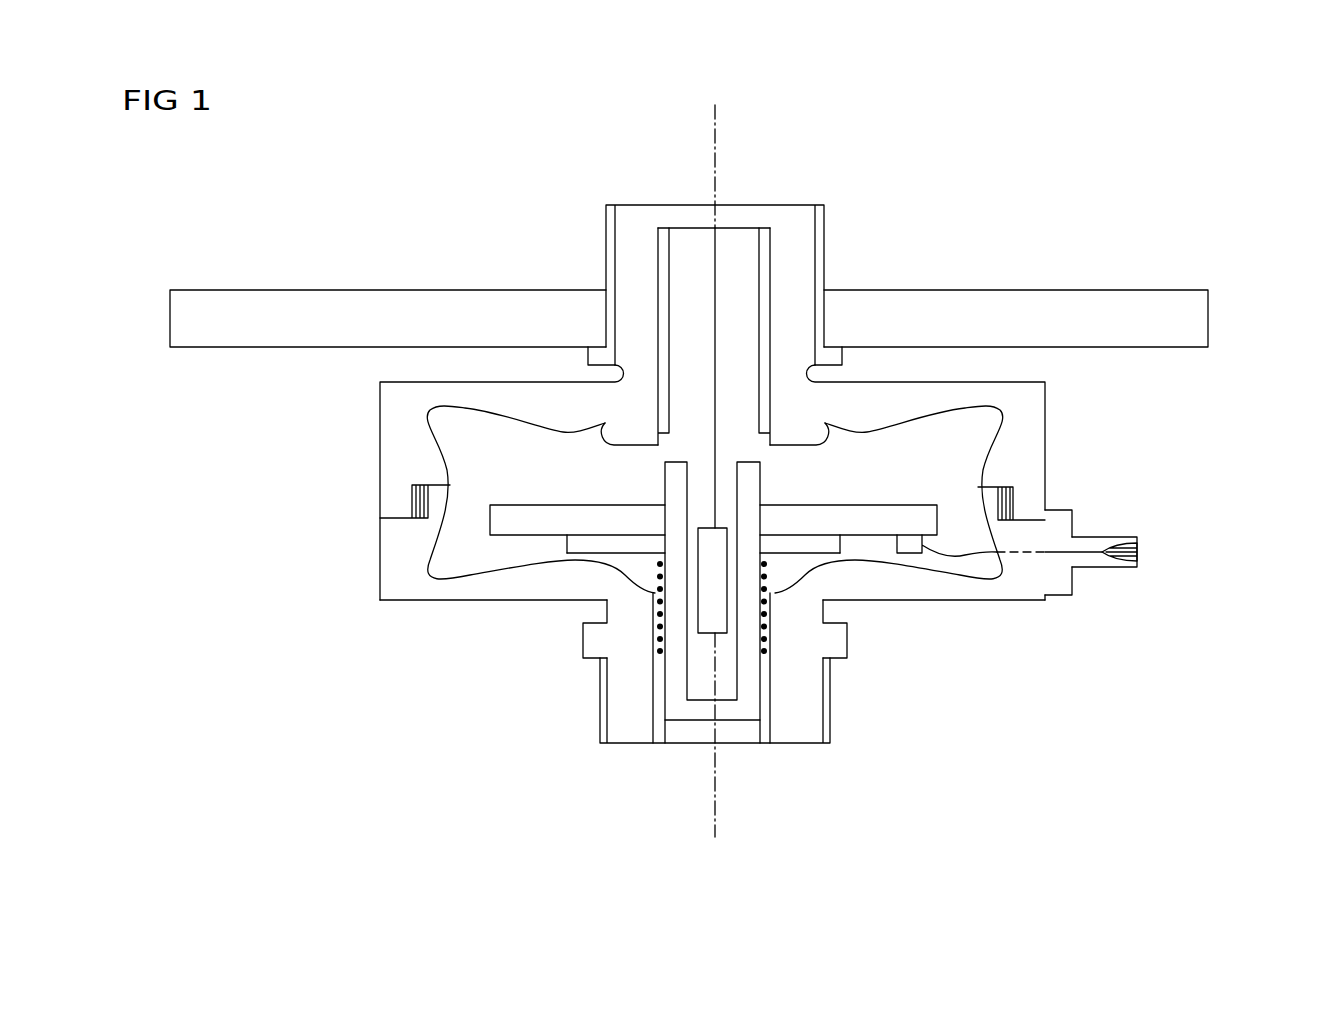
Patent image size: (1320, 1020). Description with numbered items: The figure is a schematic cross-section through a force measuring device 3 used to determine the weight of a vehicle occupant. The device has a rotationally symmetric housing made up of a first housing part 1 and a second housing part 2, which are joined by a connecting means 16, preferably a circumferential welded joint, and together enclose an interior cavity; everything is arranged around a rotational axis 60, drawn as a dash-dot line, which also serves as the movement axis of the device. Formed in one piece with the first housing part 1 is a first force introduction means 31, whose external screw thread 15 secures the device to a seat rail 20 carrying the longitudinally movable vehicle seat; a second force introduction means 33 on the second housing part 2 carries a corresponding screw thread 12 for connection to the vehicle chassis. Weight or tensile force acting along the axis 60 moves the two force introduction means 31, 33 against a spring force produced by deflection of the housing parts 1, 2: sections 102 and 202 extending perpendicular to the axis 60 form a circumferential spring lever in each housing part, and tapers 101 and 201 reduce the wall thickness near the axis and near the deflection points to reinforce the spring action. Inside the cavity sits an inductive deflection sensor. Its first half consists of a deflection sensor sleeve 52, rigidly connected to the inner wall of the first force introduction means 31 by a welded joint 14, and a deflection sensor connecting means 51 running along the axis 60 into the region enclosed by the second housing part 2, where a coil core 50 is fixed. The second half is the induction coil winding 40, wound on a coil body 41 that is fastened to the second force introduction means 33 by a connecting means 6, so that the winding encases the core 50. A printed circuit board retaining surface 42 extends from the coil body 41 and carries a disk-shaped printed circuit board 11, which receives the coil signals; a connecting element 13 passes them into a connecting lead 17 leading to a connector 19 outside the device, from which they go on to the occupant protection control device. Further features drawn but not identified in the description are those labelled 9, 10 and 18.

The first housing part 1 is at (381, 418).
The second housing part 2 is at (381, 579).
The force measuring device 3 is at (1217, 597).
The connecting means 6 is at (658, 738).
The sleeve 9 is at (580, 650).
The support foot 10 is at (600, 352).
The printed circuit board 11 is at (500, 521).
The screw thread 12 is at (605, 739).
The connecting element 13 is at (912, 554).
The welded joint 14 is at (665, 242).
The screw thread 15 is at (611, 213).
The connecting means 16 is at (412, 494).
The connecting lead 17 is at (1080, 556).
The bore 18 is at (1027, 548).
The connector 19 is at (1128, 568).
The seat rail 20 is at (258, 305).
The first force introduction means 31 is at (848, 208).
The second force introduction means 33 is at (947, 718).
The winding of the induction coil 40 is at (659, 641).
The coil body 41 is at (672, 701).
The printed circuit board retaining surface 42 is at (570, 550).
The core 50 is at (703, 634).
The deflection sensor connecting means 51 is at (712, 247).
The deflection sensor sleeve 52 is at (687, 253).
The rotational axis 60 is at (715, 136).
The taper 101 is at (447, 408).
The spring lever 102 is at (485, 381).
The taper 201 is at (422, 576).
The spring lever 202 is at (448, 602).